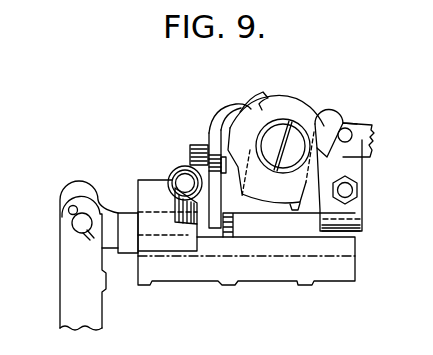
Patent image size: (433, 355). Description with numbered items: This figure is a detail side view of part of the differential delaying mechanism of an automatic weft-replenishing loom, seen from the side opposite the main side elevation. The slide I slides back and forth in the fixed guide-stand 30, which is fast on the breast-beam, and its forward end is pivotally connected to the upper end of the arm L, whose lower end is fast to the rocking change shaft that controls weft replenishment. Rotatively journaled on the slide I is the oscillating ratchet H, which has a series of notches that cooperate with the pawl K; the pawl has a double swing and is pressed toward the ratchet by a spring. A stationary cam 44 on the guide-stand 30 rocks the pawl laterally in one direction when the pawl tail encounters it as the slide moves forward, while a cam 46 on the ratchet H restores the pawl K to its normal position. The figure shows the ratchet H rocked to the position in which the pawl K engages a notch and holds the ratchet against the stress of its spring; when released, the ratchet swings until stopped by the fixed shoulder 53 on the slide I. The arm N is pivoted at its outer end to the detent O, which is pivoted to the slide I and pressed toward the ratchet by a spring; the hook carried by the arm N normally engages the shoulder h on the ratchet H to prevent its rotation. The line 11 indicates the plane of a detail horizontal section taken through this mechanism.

The arm L is at (72, 308).
The slide I is at (77, 181).
The section line 11— 11 is at (232, 196).
The fixed guide-stand 30 is at (328, 268).
The stationary cam 44 is at (196, 219).
The pawl K is at (222, 125).
The fixed shoulder 53 is at (292, 210).
The cam 46 is at (256, 104).
The oscillating ratchet H is at (284, 112).
The detent O is at (323, 120).
The arm N is at (366, 133).
The shoulder h is at (322, 161).